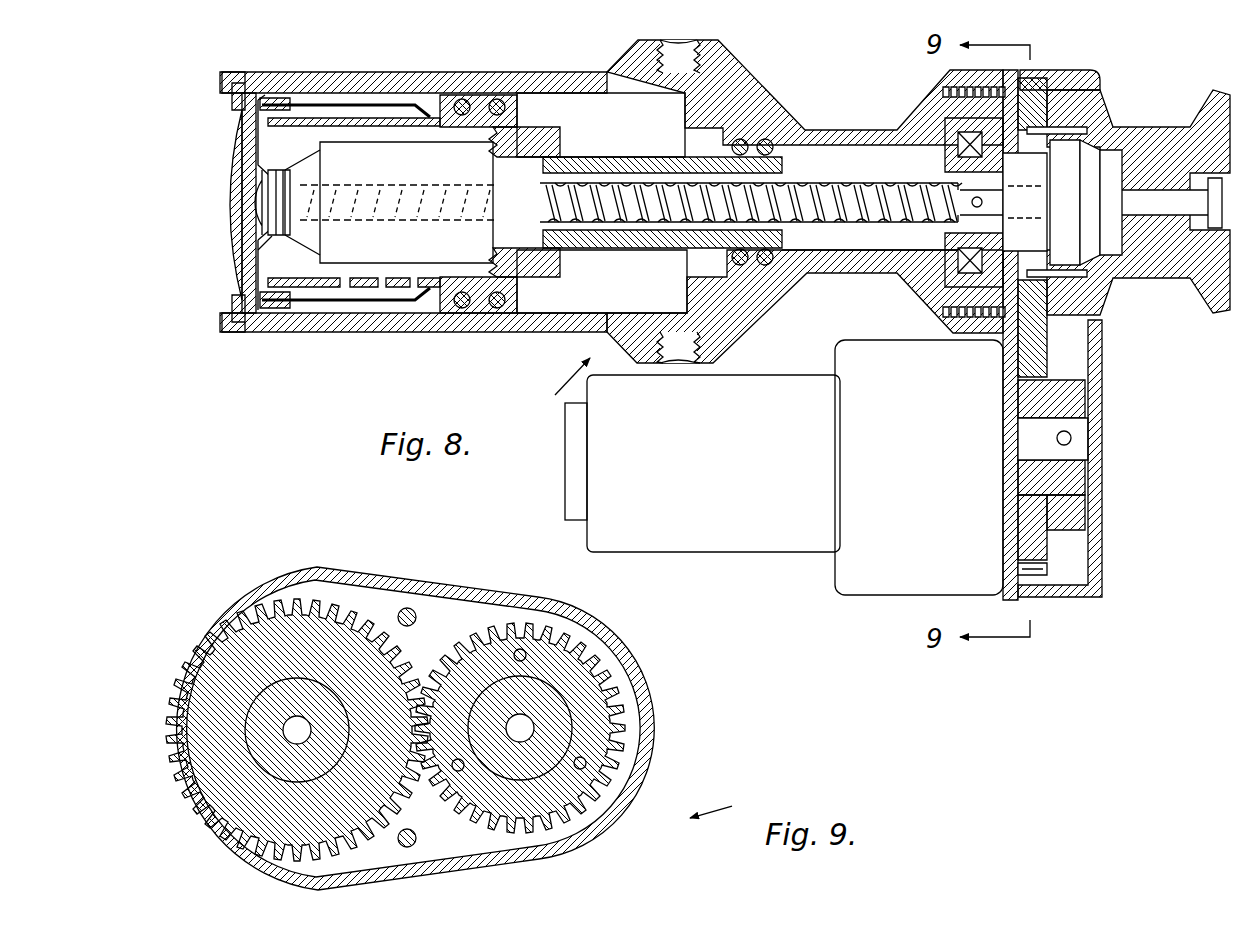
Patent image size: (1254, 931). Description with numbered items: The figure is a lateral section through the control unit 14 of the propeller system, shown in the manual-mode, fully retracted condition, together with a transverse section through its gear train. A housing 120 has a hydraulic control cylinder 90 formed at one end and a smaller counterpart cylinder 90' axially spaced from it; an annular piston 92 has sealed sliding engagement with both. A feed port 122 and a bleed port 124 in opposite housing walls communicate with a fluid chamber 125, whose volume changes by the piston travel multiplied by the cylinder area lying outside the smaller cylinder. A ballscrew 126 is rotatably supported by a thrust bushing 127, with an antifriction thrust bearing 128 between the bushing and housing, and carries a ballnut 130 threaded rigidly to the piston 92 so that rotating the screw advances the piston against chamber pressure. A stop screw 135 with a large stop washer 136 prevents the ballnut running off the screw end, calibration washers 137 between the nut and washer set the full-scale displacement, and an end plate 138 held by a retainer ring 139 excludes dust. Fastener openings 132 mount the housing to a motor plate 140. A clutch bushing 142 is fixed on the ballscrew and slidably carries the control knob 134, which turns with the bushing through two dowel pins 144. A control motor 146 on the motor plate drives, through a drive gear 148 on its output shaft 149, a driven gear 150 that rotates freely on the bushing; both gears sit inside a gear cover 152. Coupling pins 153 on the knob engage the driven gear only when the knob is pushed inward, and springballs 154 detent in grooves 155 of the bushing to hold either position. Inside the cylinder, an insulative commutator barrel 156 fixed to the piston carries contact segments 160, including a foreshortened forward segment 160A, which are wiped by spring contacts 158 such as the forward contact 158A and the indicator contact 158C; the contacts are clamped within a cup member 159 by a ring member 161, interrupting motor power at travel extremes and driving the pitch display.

In FIG. 8, the control unit 14 is at (540, 387).
In FIG. 9, the control unit 14 is at (721, 802).
In FIG. 8, the hydraulic control cylinder 90 is at (601, 124).
In FIG. 8, the smaller cylinder 90' is at (871, 243).
In FIG. 8, the annular piston 92 is at (605, 155).
In FIG. 8, the housing 120 is at (782, 300).
In FIG. 8, the feed port 122 is at (690, 350).
In FIG. 8, the bleed port 124 is at (678, 62).
In FIG. 8, the fluid chamber 125 is at (644, 292).
In FIG. 8, the ballscrew 126 is at (868, 180).
In FIG. 9, the ballscrew 126 is at (525, 728).
In FIG. 8, the thrust bushing 127 is at (955, 175).
In FIG. 8, the thrust bearing 128 is at (958, 245).
In FIG. 8, the ballnut 130 is at (465, 173).
In FIG. 8, the fastener openings 132 is at (943, 312).
In FIG. 8, the control knob 134 is at (1218, 315).
In FIG. 8, the stop screw 135 is at (262, 200).
In FIG. 8, the stop washer 136 is at (243, 165).
In FIG. 8, the calibration washers 137 is at (290, 180).
In FIG. 8, the end plate 138 is at (240, 175).
In FIG. 8, the retainer ring 139 is at (235, 305).
In FIG. 8, the motor plate 140 is at (1003, 598).
In FIG. 8, the clutch bushing 142 is at (1050, 180).
In FIG. 9, the clutch bushing 142 is at (555, 738).
In FIG. 8, the dowel pins 144 is at (1150, 265).
In FIG. 8, the control motor 146 is at (730, 553).
In FIG. 8, the drive gear 148 is at (1047, 569).
In FIG. 9, the drive gear 148 is at (210, 860).
In FIG. 8, the output shaft 149 is at (1055, 444).
In FIG. 9, the output shaft 149 is at (297, 740).
In FIG. 8, the driven gear 150 is at (1030, 62).
In FIG. 9, the driven gear 150 is at (585, 672).
In FIG. 8, the gear cover 152 is at (1102, 596).
In FIG. 9, the gear cover 152 is at (235, 868).
In FIG. 8, the coupling pins 153 is at (1055, 125).
In FIG. 9, the coupling pins 153 is at (585, 763).
In FIG. 8, the springballs 154 is at (1100, 140).
In FIG. 8, the grooves 155 is at (1112, 150).
In FIG. 8, the commutator barrel 156 is at (480, 270).
In FIG. 8, the spring contacts 158 is at (440, 98).
In FIG. 8, the forward contact 158A is at (479, 107).
In FIG. 8, the indicator contact 158C is at (440, 305).
In FIG. 8, the cup member 159 is at (242, 240).
In FIG. 8, the contact segments 160 is at (385, 290).
In FIG. 8, the forward segment 160A is at (345, 52).
In FIG. 8, the ring member 161 is at (262, 300).